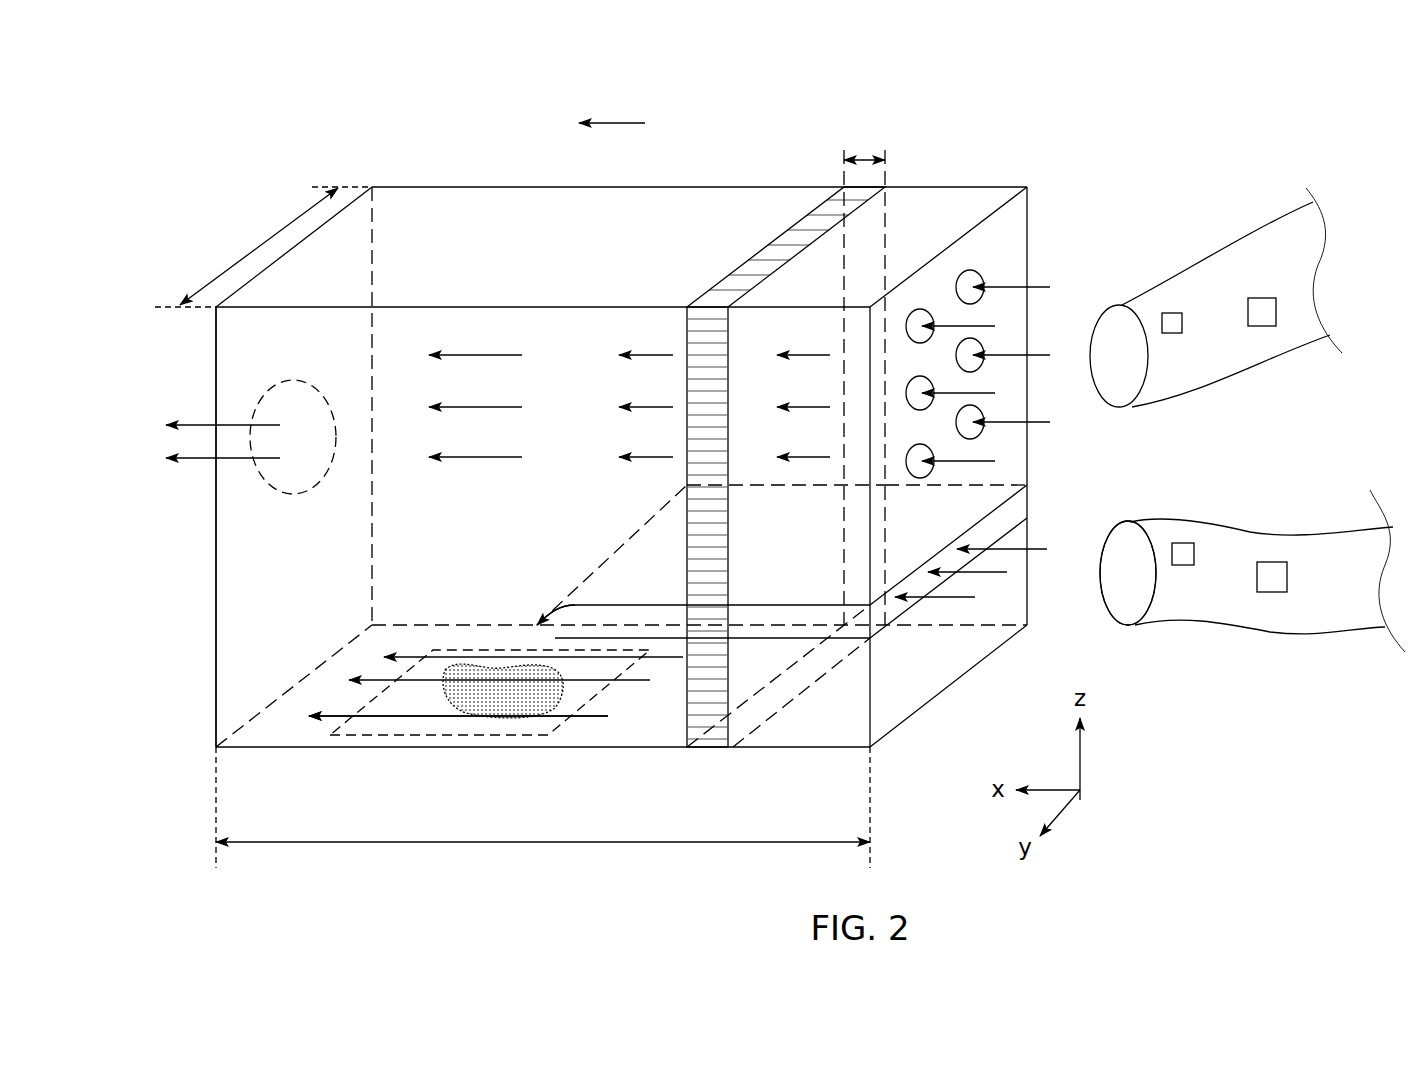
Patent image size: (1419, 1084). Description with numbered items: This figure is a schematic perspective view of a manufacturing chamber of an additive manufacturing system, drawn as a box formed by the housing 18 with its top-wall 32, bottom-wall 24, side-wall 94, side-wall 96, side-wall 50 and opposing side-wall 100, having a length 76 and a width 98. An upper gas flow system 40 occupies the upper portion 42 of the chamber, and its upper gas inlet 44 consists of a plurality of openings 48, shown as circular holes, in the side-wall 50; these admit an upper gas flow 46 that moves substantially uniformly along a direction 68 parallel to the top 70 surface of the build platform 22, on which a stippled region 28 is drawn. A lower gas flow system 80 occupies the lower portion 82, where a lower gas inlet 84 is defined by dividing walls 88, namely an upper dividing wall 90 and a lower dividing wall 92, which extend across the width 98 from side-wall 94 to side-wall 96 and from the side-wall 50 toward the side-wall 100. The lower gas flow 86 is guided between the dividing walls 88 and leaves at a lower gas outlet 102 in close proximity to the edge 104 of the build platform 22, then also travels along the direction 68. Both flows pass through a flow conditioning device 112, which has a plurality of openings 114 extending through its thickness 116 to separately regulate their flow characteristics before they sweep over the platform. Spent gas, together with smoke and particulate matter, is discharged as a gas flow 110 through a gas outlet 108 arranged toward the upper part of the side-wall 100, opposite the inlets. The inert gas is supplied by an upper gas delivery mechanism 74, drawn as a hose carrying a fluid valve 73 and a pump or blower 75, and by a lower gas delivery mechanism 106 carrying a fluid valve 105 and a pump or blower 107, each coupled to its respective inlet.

The housing 18 is at (970, 187).
The build platform 22 is at (500, 737).
The bottom-wall 24 is at (283, 748).
The powder bed / build material 28 is at (470, 726).
The top-wall 32 is at (482, 187).
The upper gas flow system 40 is at (1038, 178).
The upper portion 42 is at (170, 287).
The upper gas inlet 44 is at (938, 293).
The upper gas flow 46 is at (515, 353).
The plurality of openings 48 is at (985, 272).
The side-wall 50 is at (1030, 598).
The direction 68 is at (614, 122).
The top surface 70 is at (410, 700).
The fluid valve 73 is at (1183, 323).
The upper gas delivery mechanism 74 is at (1182, 276).
The pump or blower 75 is at (1262, 297).
The length 76 is at (625, 840).
The lower gas flow system 80 is at (1100, 490).
The lower portion 82 is at (180, 598).
The lower gas inlet 84 is at (893, 603).
The lower gas flow 86 is at (1037, 547).
The dividing walls 88 is at (624, 528).
The upper dividing wall 90 is at (822, 592).
The lower dividing wall 92 is at (762, 640).
The side-wall 94 is at (216, 350).
The side-wall 96 is at (405, 187).
The width 98 is at (262, 240).
The side-wall 100 is at (216, 643).
The lower gas outlet 102 is at (538, 622).
The edge 104 is at (563, 722).
The fluid valve 105 is at (1195, 555).
The lower gas delivery mechanism 106 is at (1240, 516).
The pump or blower 107 is at (1288, 577).
The gas outlet 108 is at (293, 380).
The gas flow 110 is at (197, 425).
The flow conditioning device 112 is at (826, 215).
The plurality of openings 114 is at (800, 213).
The thickness 116 is at (862, 155).